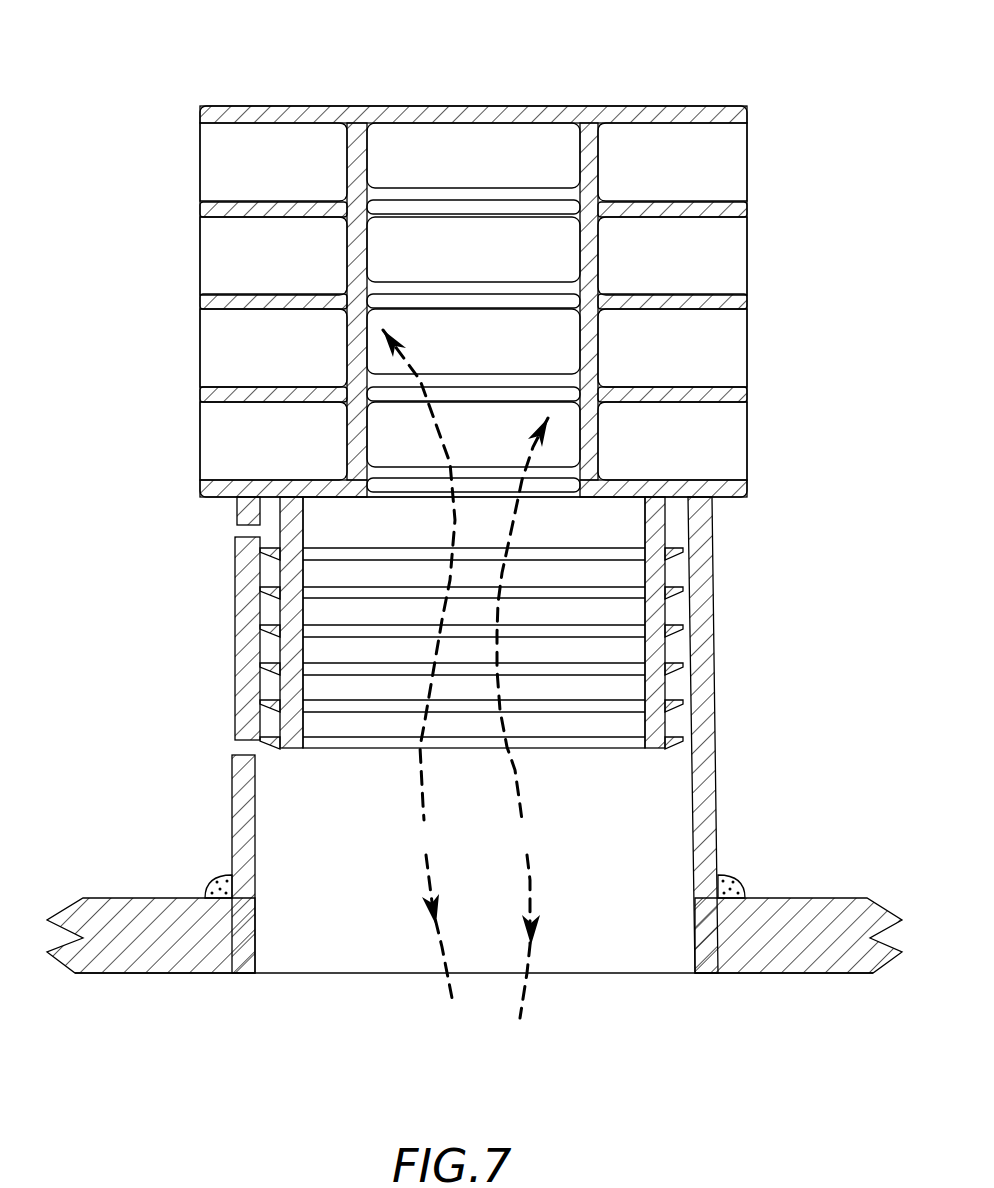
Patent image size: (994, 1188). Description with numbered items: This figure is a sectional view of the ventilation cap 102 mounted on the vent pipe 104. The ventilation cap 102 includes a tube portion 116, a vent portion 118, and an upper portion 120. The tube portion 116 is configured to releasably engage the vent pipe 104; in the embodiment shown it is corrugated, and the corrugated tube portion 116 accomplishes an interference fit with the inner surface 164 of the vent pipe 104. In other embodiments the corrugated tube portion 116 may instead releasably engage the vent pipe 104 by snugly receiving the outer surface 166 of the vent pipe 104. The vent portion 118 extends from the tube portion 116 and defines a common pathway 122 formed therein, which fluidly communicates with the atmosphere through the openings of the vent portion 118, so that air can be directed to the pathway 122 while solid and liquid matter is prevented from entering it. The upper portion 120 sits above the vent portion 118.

The ventilation cap 102 is at (143, 71).
The vent pipe 104 is at (705, 800).
The tube portion 116 is at (267, 532).
The vent portion 118 is at (197, 503).
The upper portion 120 is at (435, 256).
The common pathway 122 is at (465, 674).
The inner surface 164 is at (738, 843).
The outer surface 166 is at (712, 608).